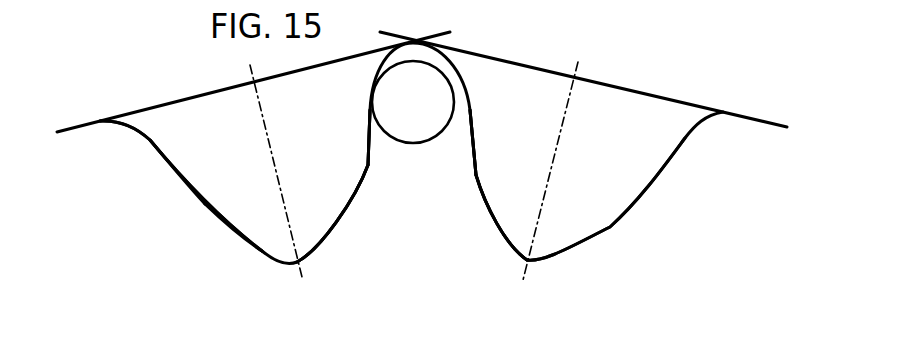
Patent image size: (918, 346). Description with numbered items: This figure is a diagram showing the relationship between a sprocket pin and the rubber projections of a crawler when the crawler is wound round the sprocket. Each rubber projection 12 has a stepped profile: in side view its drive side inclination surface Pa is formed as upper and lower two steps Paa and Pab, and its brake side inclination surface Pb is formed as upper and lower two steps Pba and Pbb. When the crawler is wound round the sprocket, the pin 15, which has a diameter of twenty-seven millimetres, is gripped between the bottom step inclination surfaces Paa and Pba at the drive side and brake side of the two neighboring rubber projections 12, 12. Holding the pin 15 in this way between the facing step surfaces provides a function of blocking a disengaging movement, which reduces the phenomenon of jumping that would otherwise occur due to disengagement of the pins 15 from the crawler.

The rubber projection 12 is at (233, 212).
The pin 15 is at (433, 83).
The drive side inclination surface Pa is at (187, 215).
The brake side inclination surface Pb is at (355, 208).
The bottom step inclination surface of drive side Paa is at (172, 168).
The step of drive side inclination surface Pab is at (253, 247).
The bottom step inclination surface of brake side Pba is at (367, 152).
The step of brake side inclination surface Pbb is at (337, 218).